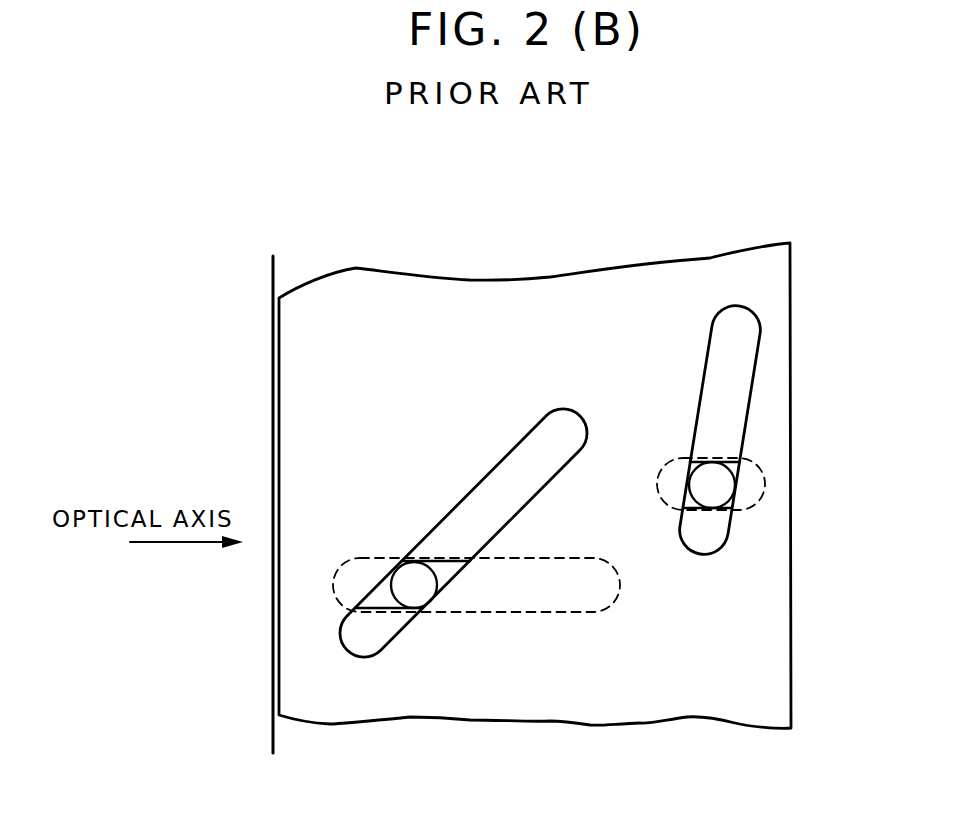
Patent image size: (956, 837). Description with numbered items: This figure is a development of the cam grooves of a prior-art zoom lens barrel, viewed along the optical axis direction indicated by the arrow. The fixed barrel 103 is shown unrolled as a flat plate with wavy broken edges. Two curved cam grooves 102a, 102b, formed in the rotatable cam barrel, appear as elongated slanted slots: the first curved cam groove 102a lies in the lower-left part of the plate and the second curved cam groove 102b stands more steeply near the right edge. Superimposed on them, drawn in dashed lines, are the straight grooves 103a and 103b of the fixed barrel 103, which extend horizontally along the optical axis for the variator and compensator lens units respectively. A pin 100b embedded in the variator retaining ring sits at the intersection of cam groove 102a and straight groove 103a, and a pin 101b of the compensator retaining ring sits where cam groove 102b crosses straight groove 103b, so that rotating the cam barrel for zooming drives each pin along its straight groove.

The pin 100b is at (413, 600).
The pin 101b is at (718, 480).
The curved cam groove 102a is at (500, 466).
The curved cam groove 102b is at (711, 329).
The fixed barrel 103 is at (558, 681).
The straight groove 103a is at (380, 607).
The straight groove 103b is at (750, 507).